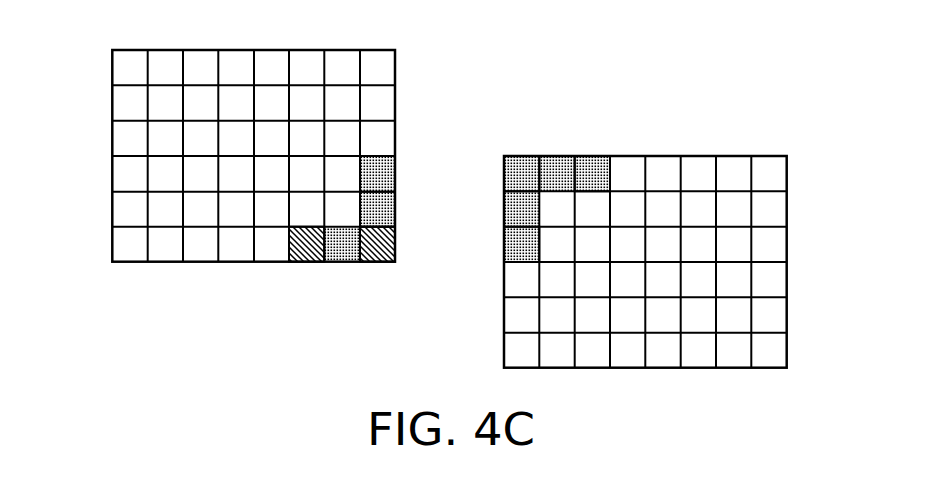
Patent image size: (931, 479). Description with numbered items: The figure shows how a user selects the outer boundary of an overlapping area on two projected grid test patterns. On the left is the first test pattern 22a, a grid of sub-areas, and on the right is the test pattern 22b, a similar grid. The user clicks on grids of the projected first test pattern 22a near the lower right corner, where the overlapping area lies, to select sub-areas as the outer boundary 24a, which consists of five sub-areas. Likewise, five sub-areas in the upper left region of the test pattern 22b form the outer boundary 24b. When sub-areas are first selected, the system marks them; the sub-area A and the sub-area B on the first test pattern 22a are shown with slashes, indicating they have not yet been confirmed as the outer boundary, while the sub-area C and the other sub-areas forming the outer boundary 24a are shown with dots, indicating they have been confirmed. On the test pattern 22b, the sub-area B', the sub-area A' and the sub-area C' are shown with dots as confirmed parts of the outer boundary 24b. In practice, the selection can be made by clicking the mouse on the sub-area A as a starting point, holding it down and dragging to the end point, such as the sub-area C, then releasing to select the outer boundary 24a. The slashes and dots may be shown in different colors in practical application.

The first test pattern 22a is at (112, 101).
The outer boundary 24a is at (397, 171).
The sub-area C is at (396, 211).
The sub-area A is at (306, 277).
The sub-area B is at (377, 277).
The first test pattern 22b is at (787, 205).
The outer boundary 24b is at (556, 156).
The sub-area B' is at (521, 138).
The sub-area A' is at (616, 138).
The sub-area C' is at (500, 263).